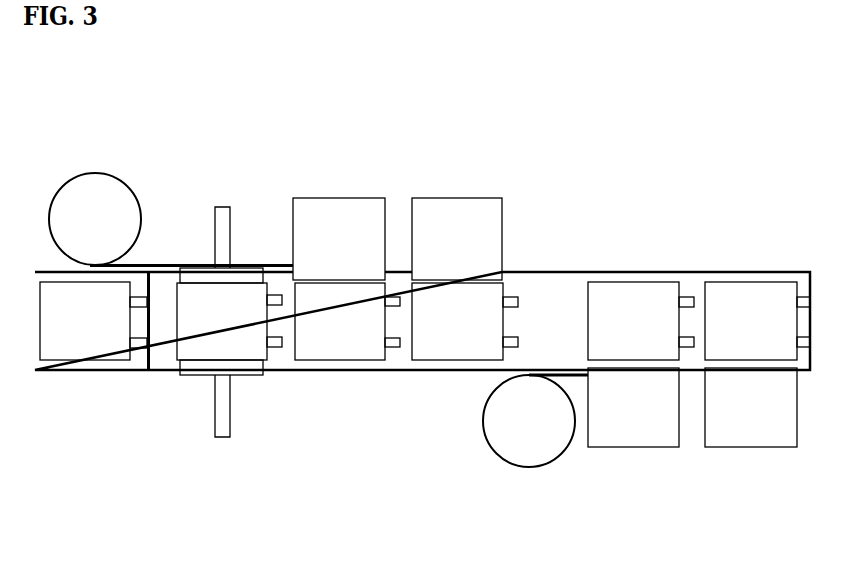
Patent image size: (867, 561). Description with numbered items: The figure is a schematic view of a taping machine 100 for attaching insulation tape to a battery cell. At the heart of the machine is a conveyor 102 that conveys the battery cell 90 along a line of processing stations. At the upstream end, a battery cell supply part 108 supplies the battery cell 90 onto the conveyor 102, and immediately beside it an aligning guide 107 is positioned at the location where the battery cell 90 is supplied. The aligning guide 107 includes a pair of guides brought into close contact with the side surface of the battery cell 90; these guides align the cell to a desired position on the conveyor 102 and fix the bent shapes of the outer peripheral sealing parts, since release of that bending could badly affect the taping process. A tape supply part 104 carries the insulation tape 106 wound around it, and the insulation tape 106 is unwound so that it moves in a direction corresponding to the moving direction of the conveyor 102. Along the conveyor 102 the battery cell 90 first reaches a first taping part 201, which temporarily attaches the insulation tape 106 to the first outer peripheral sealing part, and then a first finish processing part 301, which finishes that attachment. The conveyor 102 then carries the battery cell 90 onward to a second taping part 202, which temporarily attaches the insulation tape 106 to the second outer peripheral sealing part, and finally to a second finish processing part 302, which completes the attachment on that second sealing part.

The taping machine 100 is at (93, 87).
The conveyor 102 is at (553, 285).
The tape supply part 104 is at (95, 172).
The insulation tape 106 is at (176, 249).
The aligning guide 107 is at (197, 375).
The battery cell supply part 108 is at (97, 373).
The battery cell 90 is at (337, 348).
The first taping part 201 is at (335, 208).
The second taping part 202 is at (637, 439).
The first finish processing part 301 is at (452, 210).
The second finish processing part 302 is at (750, 438).